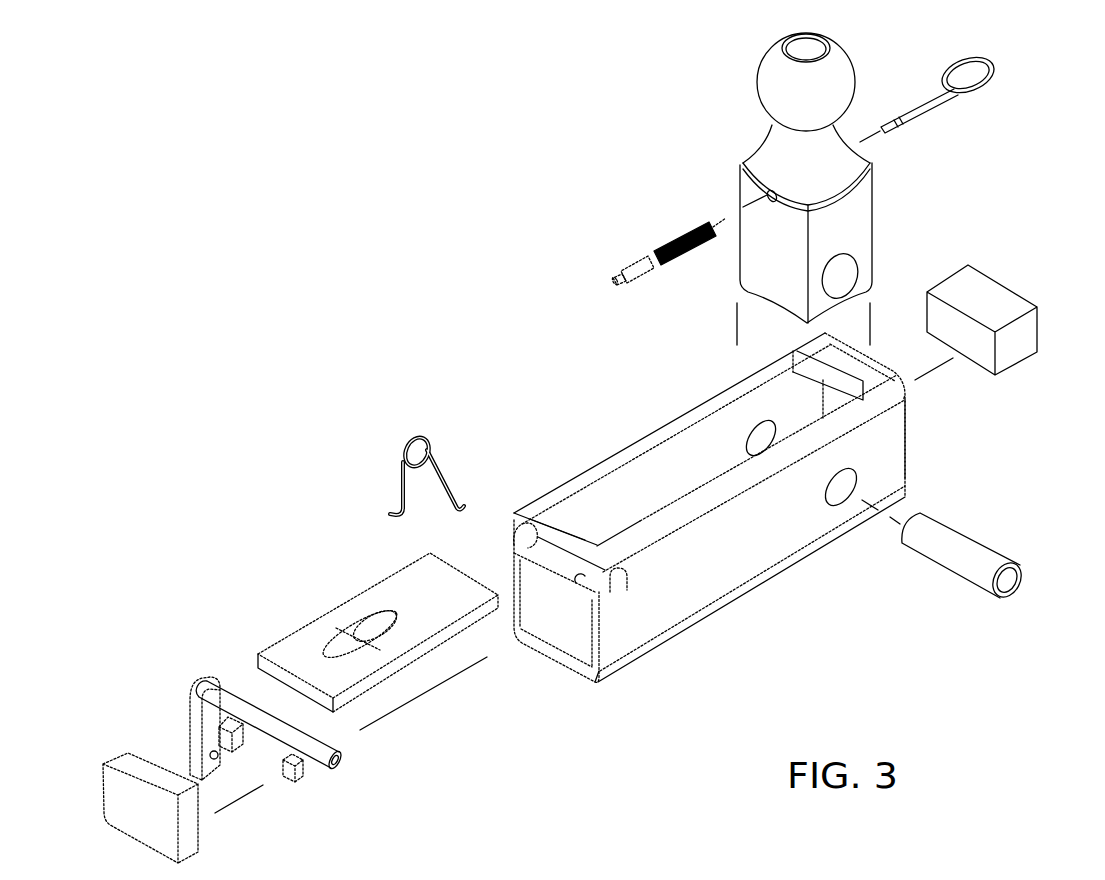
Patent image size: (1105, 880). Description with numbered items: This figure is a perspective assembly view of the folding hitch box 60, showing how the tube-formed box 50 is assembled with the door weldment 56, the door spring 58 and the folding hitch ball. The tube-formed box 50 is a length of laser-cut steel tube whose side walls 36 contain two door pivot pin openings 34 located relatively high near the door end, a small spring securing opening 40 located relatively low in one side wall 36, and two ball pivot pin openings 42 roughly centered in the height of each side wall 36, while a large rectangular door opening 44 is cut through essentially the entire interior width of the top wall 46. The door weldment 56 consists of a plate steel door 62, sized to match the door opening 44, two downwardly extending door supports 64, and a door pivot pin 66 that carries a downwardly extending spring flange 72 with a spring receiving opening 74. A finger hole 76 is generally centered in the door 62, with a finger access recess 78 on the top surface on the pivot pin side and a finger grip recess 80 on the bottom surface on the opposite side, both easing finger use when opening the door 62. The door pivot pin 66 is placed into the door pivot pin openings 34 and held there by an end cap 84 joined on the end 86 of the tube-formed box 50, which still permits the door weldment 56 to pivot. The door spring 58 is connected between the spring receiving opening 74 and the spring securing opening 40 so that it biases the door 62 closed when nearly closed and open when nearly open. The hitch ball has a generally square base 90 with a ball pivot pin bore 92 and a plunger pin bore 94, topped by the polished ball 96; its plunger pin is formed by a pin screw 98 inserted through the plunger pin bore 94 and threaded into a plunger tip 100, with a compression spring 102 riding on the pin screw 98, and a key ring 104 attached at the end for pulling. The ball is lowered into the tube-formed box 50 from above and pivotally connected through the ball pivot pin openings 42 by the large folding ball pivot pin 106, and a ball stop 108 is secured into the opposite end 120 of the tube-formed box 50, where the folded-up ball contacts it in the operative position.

The door pivot pin openings 34 is at (518, 543).
The side wall 36 is at (633, 465).
The spring securing opening 40 is at (580, 582).
The ball pivot pin openings 42 is at (768, 438).
The door opening 44 is at (570, 517).
The top wall 46 is at (876, 365).
The tube-formed box 50 is at (895, 615).
The door weldment 56 is at (234, 546).
The door spring 58 is at (401, 496).
The folding hitch box 60 is at (250, 283).
The door 62 is at (303, 643).
The door supports 64 is at (254, 688).
The door pivot pin 66 is at (286, 735).
The spring flange 72 is at (197, 737).
The spring receiving opening 74 is at (214, 759).
The finger hole 76 is at (346, 636).
The finger access recess 78 is at (340, 640).
The finger grip recess 80 is at (372, 628).
The end cap 84 is at (145, 808).
The end 86 is at (594, 680).
The base 90 is at (765, 258).
The ball pivot pin bore 92 is at (845, 272).
The plunger pin bore 94 is at (767, 196).
The ball 96 is at (773, 93).
The pin screw 98 is at (935, 102).
The plunger tip 100 is at (630, 272).
The compression spring 102 is at (668, 240).
The key ring 104 is at (998, 80).
The folding ball pivot pin 106 is at (955, 533).
The ball stop 108 is at (975, 290).
The end 120 is at (905, 428).